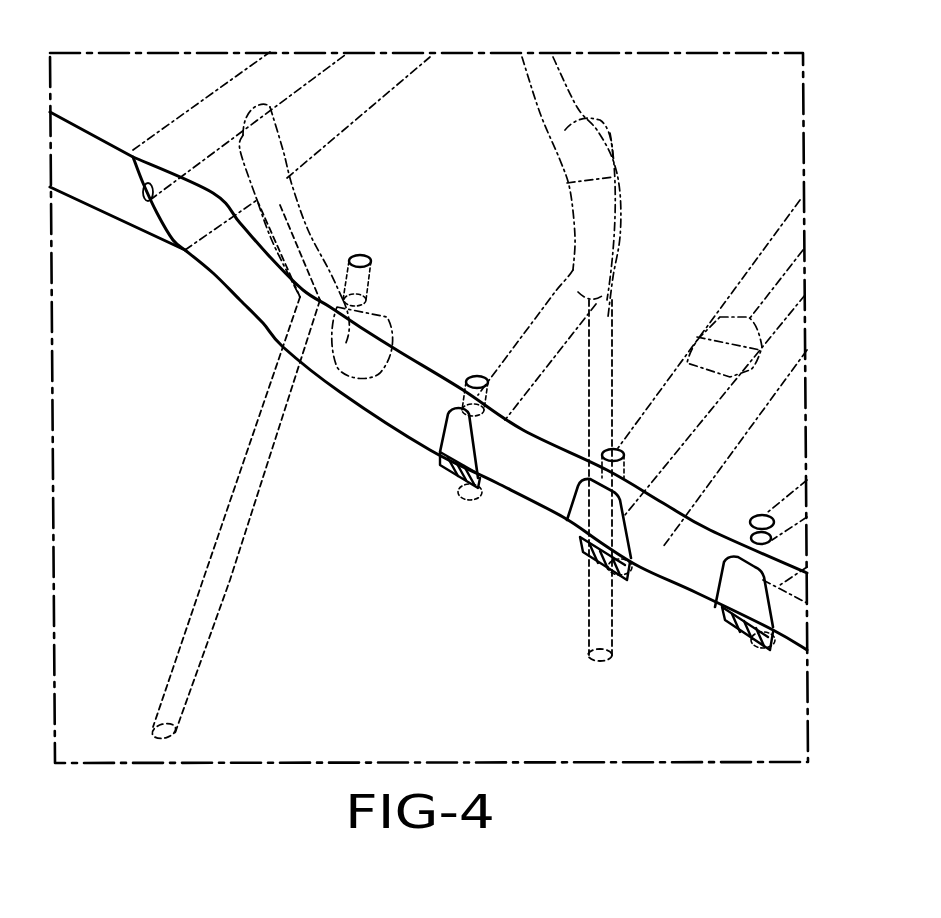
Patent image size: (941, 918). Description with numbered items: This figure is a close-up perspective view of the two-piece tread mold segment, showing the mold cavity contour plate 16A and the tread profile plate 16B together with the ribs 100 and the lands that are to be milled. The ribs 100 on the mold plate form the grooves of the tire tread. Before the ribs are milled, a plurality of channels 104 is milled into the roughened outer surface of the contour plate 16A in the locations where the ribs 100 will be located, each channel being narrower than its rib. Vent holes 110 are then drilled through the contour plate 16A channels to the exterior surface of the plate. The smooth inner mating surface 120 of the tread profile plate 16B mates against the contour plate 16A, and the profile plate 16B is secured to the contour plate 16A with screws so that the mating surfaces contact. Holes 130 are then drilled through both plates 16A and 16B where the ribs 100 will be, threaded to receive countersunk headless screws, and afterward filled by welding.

The mold cavity contour plate 16A is at (354, 670).
The tread profile plate 16B is at (777, 417).
The ribs 100 is at (457, 440).
The channels 104 is at (450, 467).
The vent holes 110 is at (237, 527).
The inner mating surface 120 is at (382, 418).
The holes 130 is at (362, 256).